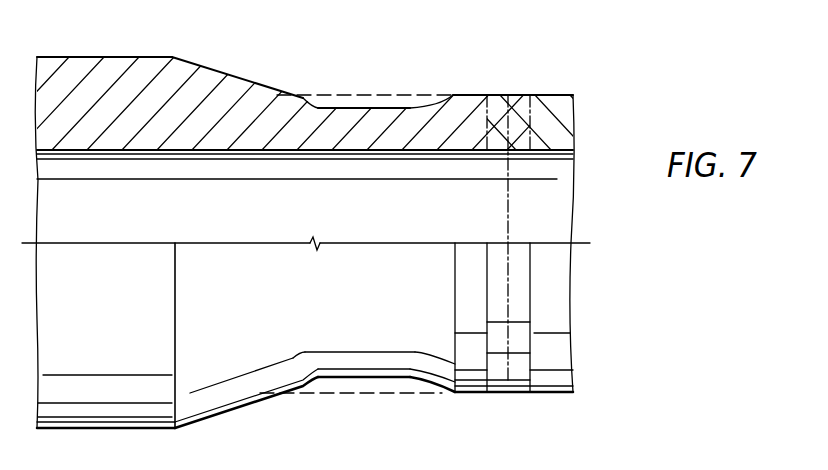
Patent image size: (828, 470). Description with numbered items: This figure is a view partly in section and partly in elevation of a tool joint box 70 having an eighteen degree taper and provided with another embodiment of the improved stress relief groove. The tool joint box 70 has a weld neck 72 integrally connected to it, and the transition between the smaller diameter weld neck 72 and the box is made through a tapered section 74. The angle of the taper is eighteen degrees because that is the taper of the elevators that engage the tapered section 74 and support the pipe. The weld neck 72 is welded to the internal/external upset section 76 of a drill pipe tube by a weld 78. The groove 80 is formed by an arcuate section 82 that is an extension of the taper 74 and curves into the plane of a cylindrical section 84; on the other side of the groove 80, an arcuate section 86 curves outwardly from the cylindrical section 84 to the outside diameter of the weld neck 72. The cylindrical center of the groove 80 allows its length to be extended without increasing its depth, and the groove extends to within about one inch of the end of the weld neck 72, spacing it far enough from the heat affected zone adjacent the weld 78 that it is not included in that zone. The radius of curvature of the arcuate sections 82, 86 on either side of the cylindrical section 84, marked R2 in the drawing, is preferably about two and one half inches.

The tool joint box 70 is at (109, 53).
The weld neck 72 is at (470, 94).
The tapered section 74 is at (247, 81).
The internal/external upset section 76 is at (556, 93).
The weld 78 is at (515, 91).
The groove 80 is at (362, 83).
The arcuate section 82 is at (300, 384).
The cylindrical section 84 is at (383, 379).
The arcuate section 86 is at (433, 391).
The radius R2 is at (316, 103).